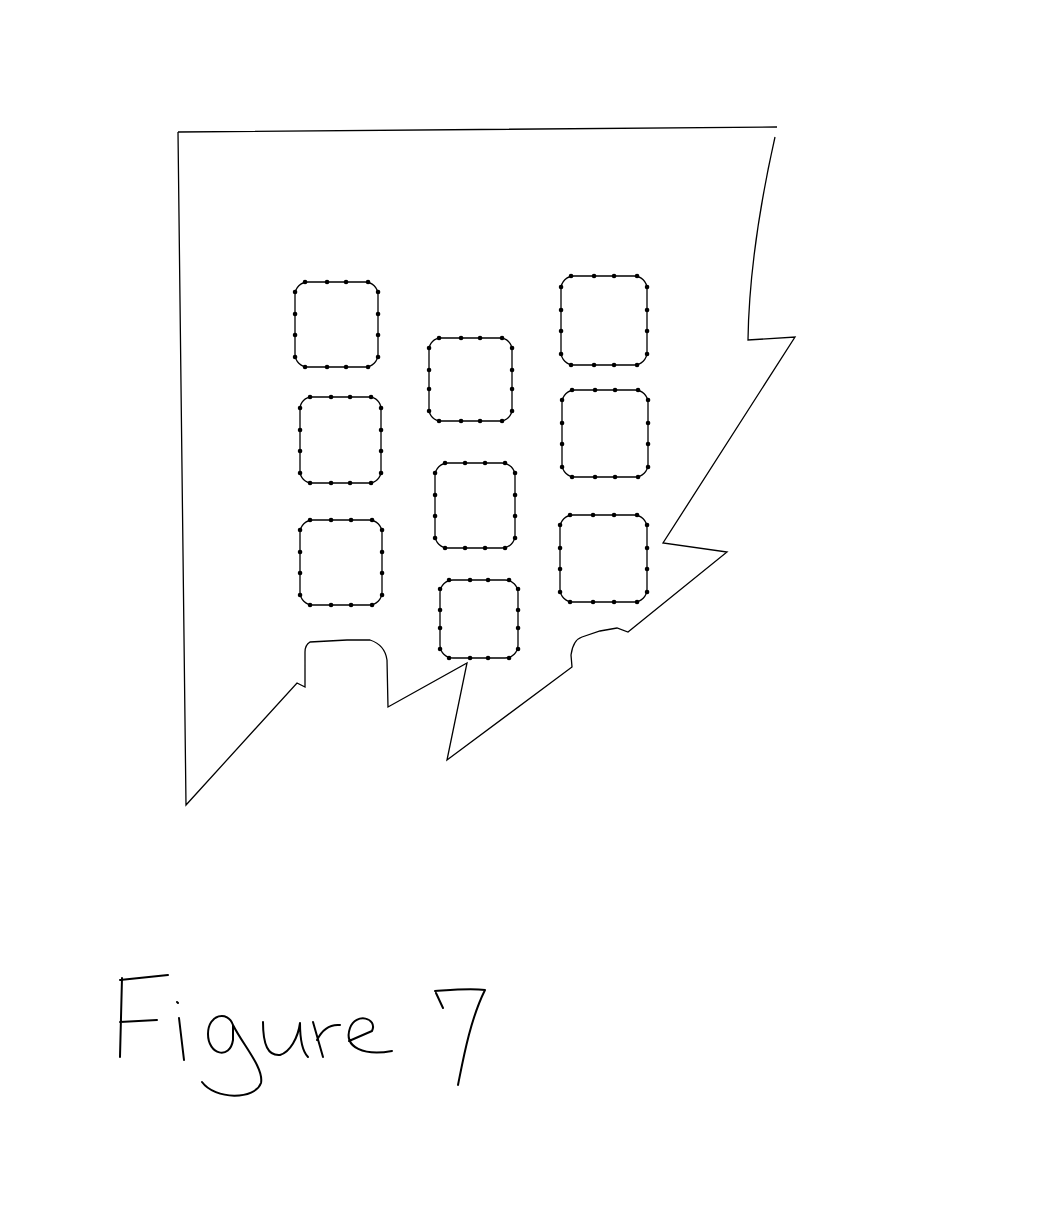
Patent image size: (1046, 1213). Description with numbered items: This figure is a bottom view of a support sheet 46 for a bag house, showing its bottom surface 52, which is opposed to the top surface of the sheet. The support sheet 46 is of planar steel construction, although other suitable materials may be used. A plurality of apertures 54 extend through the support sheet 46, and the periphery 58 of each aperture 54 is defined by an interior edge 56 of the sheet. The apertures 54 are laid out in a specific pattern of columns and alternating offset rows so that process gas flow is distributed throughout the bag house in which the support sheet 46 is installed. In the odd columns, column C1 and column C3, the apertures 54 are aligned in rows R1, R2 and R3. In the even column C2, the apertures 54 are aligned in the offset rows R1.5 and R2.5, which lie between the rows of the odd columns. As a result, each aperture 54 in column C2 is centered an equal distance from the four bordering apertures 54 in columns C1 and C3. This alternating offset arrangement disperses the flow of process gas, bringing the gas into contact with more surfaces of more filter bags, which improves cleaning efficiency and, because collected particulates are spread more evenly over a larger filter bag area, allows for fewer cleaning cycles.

The support sheet 46 is at (313, 165).
The bottom surface 52 is at (587, 155).
The apertures 54 is at (615, 557).
The interior edge 56 is at (342, 607).
The periphery 58 is at (443, 650).
The column 1 C1 is at (560, 393).
The column 2 C2 is at (520, 402).
The column 3 C3 is at (662, 330).
The row 1 R1 is at (278, 332).
The row 1.5 R1.5 is at (423, 378).
The row 2 R2 is at (273, 458).
The row 2.5 R2.5 is at (420, 498).
The row 3 R3 is at (282, 578).